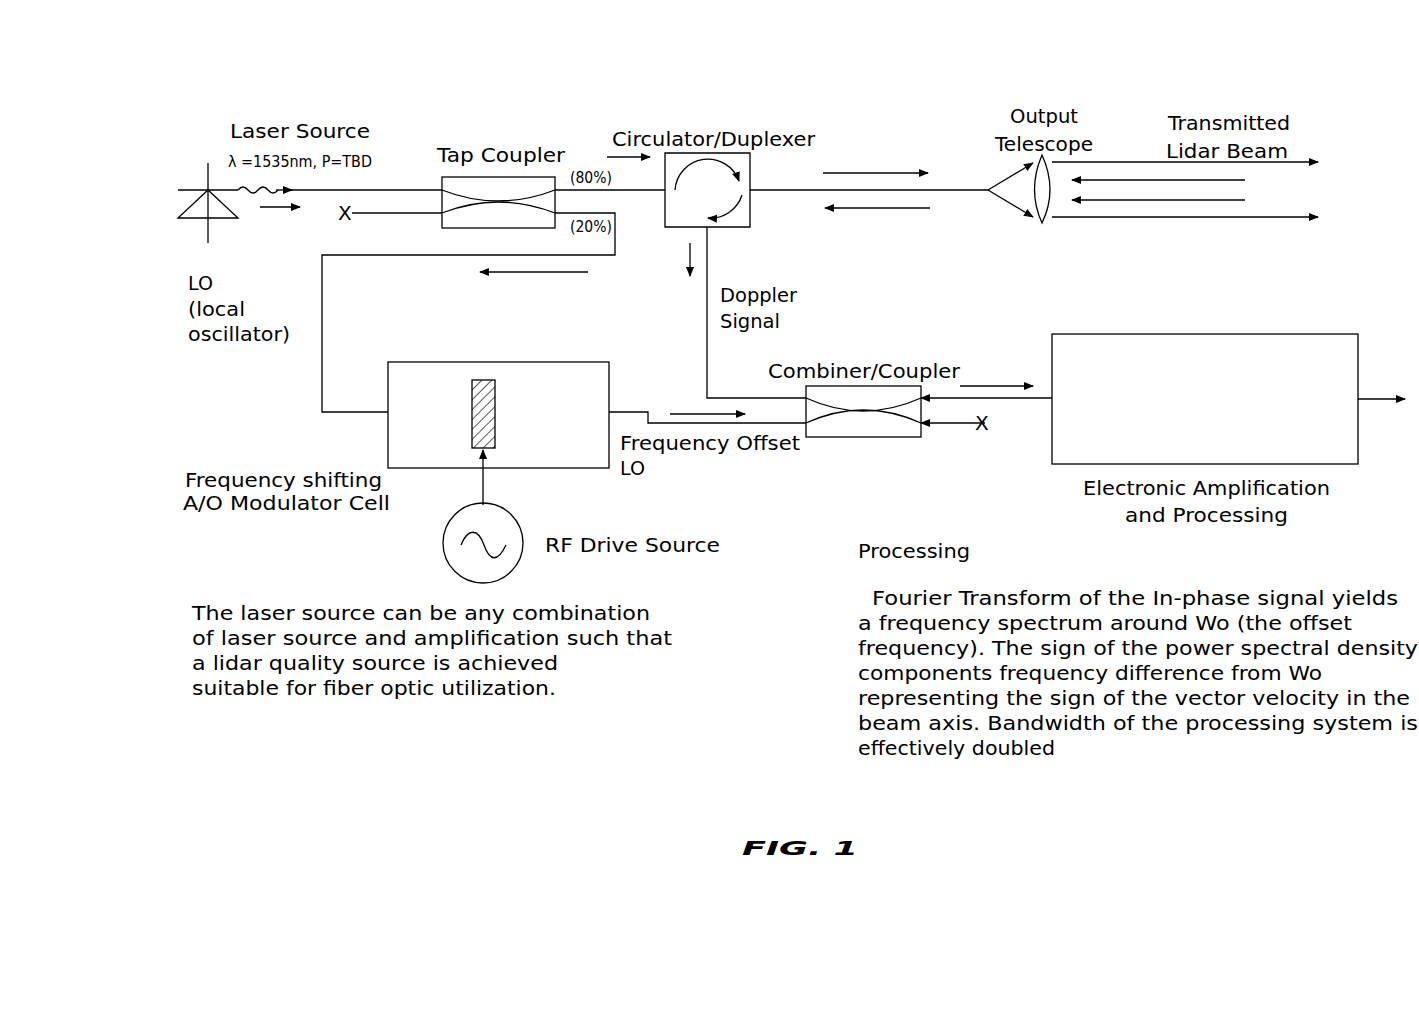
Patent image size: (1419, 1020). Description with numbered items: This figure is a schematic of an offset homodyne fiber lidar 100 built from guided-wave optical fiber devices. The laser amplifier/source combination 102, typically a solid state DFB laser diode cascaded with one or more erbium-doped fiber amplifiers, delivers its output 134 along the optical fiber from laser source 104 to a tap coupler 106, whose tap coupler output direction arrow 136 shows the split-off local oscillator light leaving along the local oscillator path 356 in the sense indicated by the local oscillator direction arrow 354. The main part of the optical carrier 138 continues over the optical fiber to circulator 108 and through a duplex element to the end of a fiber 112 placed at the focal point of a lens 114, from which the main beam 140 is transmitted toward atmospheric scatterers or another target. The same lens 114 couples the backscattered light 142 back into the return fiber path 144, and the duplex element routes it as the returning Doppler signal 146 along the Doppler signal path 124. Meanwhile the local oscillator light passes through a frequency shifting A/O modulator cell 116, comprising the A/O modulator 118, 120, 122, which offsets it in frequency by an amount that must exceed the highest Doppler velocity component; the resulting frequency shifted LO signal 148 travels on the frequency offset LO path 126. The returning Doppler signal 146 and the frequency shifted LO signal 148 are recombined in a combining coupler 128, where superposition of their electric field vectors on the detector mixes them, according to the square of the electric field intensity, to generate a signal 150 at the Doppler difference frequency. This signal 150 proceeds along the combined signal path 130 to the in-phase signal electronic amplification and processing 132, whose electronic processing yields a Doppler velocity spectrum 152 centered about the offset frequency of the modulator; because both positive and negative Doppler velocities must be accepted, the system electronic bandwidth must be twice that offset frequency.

The offset homodyne fiber lidar 100 is at (752, 170).
The laser amplifier/source combination 102 is at (186, 210).
The optical fiber from laser source 104 is at (387, 189).
The tap coupler 106 is at (553, 172).
The optical fiber to circulator 108 is at (641, 192).
The fiber 112 is at (765, 193).
The lens 114 is at (1042, 225).
The frequency shifting A/O modulator cell 116 is at (548, 362).
The A/O modulator 118 is at (498, 405).
The A/O modulator 120 is at (445, 553).
The A/O modulator 122 is at (487, 478).
The Doppler signal path 124 is at (712, 358).
The frequency offset LO path 126 is at (627, 410).
The combining coupler 128 is at (882, 440).
The combined signal path 130 is at (1026, 403).
The in-phase signal electronic amplification and processing 132 is at (1312, 427).
The output 134 is at (270, 208).
The tap coupler output direction arrow 136 is at (610, 157).
The optical carrier 138 is at (855, 173).
The main beam 140 is at (1297, 164).
The backscattered light 142 is at (1172, 181).
The return fiber path 144 is at (878, 208).
The returning Doppler signal 146 is at (684, 262).
The frequency shifted LO signal 148 is at (697, 412).
The signal 150 is at (1003, 385).
The Doppler velocity spectrum 152 is at (1372, 397).
The local oscillator direction arrow 354 is at (518, 275).
The local oscillator path 356 is at (325, 330).